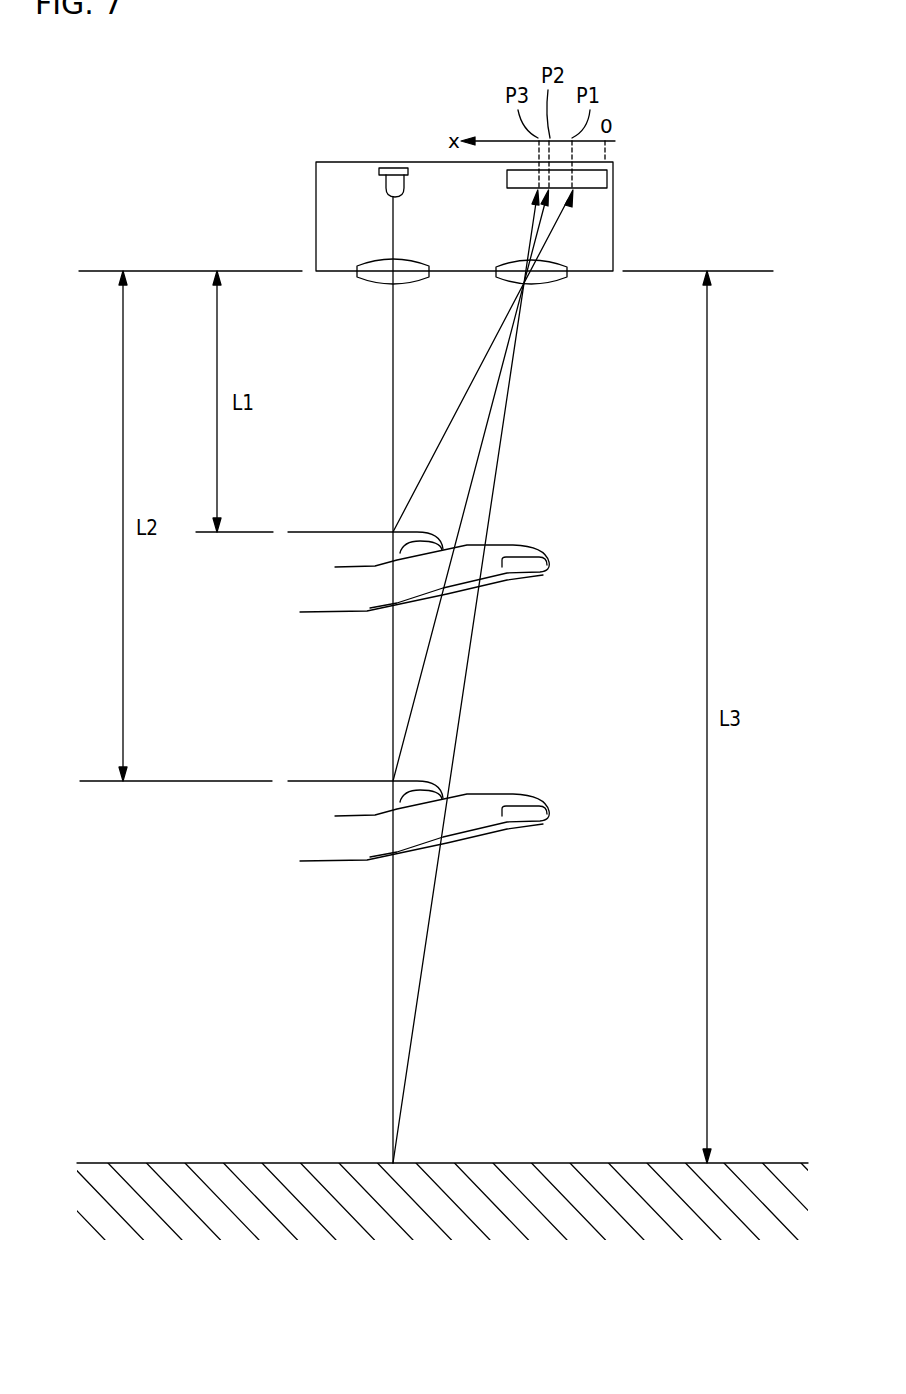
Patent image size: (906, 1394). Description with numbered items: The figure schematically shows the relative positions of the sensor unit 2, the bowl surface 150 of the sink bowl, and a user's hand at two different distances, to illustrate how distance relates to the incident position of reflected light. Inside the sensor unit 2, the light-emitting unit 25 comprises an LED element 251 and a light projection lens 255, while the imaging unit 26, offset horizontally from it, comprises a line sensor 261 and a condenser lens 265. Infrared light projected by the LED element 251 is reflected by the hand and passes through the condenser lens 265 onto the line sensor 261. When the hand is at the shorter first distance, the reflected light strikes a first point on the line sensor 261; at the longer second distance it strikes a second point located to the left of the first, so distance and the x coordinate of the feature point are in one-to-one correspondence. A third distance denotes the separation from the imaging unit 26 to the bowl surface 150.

The sensor unit 2 is at (303, 217).
The light-emitting unit 25 is at (354, 236).
The LED element 251 is at (395, 180).
The light projection lens 255 is at (373, 272).
The imaging unit 26 is at (588, 268).
The line sensor 261 is at (608, 178).
The condenser lens 265 is at (552, 272).
The bowl surface 150 is at (747, 1163).